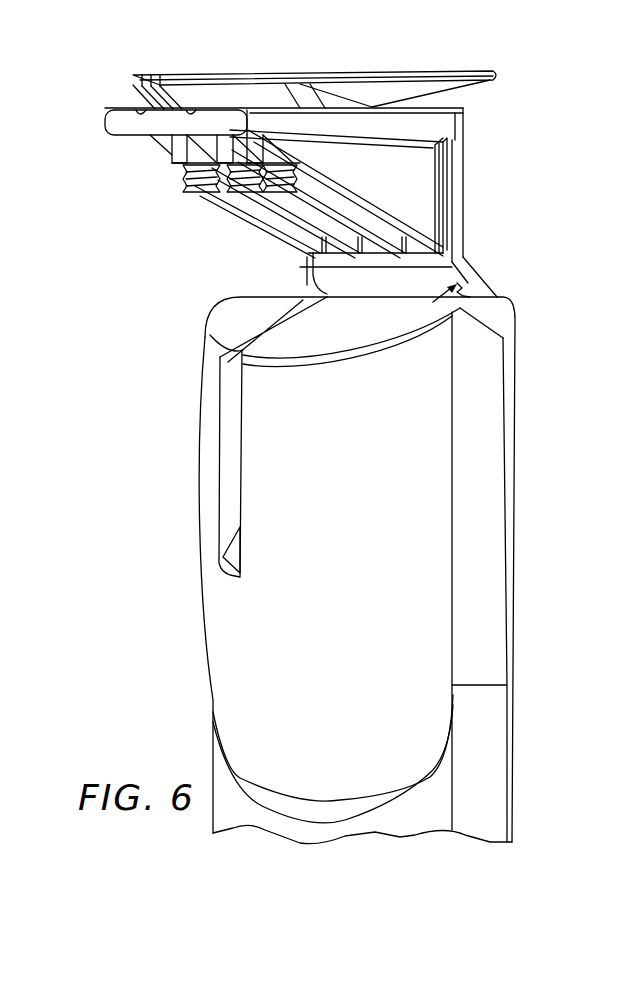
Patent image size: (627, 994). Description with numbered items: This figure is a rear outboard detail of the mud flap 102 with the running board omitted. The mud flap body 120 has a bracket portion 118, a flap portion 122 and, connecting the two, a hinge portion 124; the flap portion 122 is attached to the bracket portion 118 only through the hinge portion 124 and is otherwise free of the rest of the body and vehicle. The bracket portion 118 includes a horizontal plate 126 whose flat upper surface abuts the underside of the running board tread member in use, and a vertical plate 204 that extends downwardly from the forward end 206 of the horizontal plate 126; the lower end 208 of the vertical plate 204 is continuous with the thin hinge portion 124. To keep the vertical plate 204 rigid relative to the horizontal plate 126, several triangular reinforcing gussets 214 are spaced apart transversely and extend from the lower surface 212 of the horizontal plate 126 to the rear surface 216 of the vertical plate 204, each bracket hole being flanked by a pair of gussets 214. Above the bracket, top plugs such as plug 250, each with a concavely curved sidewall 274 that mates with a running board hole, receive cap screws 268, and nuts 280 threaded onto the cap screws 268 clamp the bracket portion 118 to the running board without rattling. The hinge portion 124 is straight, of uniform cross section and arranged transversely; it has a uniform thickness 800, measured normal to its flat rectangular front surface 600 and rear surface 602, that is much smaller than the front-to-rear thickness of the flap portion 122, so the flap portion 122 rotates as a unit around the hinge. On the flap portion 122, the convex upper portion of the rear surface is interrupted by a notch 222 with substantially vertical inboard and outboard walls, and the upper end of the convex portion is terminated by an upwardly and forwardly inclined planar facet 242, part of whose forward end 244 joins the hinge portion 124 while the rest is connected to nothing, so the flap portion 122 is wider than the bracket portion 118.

The mud flap 102 is at (537, 645).
The bracket portion 118 is at (459, 172).
The mud flap body 120 is at (200, 522).
The flap portion 122 is at (505, 588).
The hinge portion 124 is at (422, 283).
The horizontal plate 126 is at (340, 120).
The vertical plate 204 is at (463, 152).
The forward end 206 is at (467, 125).
The lower end 208 is at (467, 245).
The lower surface 212 is at (123, 137).
The triangular reinforcing gussets 214 is at (373, 183).
The rear surface 216 is at (448, 190).
The notch 222 is at (230, 388).
The planar facet 242 is at (218, 320).
The forward end 244 is at (326, 294).
The top plug 250 is at (302, 74).
The cap screws 268 is at (185, 193).
The concavely curved sidewall 274 is at (467, 91).
The nuts 280 is at (177, 153).
The front surface 600 is at (483, 276).
The rear surface 602 is at (383, 285).
The thickness 800 is at (481, 268).